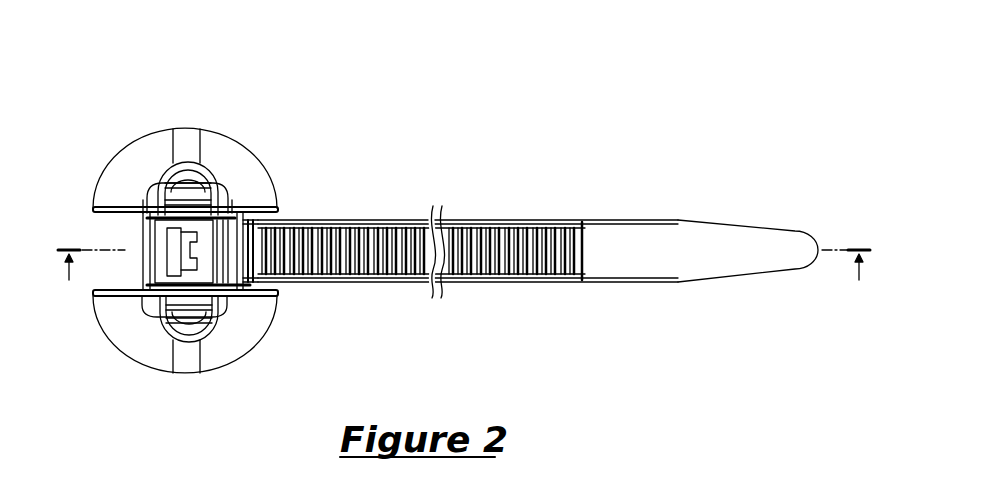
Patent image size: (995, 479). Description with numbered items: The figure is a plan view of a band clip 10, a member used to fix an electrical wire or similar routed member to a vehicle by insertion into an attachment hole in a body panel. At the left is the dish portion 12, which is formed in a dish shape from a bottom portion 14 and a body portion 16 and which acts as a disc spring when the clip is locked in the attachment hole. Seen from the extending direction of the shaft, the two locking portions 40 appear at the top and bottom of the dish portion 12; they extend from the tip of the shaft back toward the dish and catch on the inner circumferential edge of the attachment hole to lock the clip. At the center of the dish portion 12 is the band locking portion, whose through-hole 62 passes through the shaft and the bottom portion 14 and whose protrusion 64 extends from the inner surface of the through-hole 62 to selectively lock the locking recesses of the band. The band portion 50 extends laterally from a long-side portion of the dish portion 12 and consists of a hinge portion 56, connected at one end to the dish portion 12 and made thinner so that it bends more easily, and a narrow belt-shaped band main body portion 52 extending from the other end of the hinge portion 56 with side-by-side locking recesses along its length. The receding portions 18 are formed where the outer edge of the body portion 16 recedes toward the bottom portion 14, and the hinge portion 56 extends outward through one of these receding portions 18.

The band clip 10 is at (110, 68).
The dish portion 12 is at (337, 295).
The bottom portion 14 is at (265, 292).
The body portion 16 is at (253, 333).
The receding portion 18 is at (134, 242).
The locking portion 40 is at (180, 178).
The band portion 50 is at (378, 150).
The band main body portion 52 is at (368, 222).
The hinge portion 56 is at (252, 210).
The through-hole 62 is at (162, 234).
The protrusion 64 is at (170, 258).